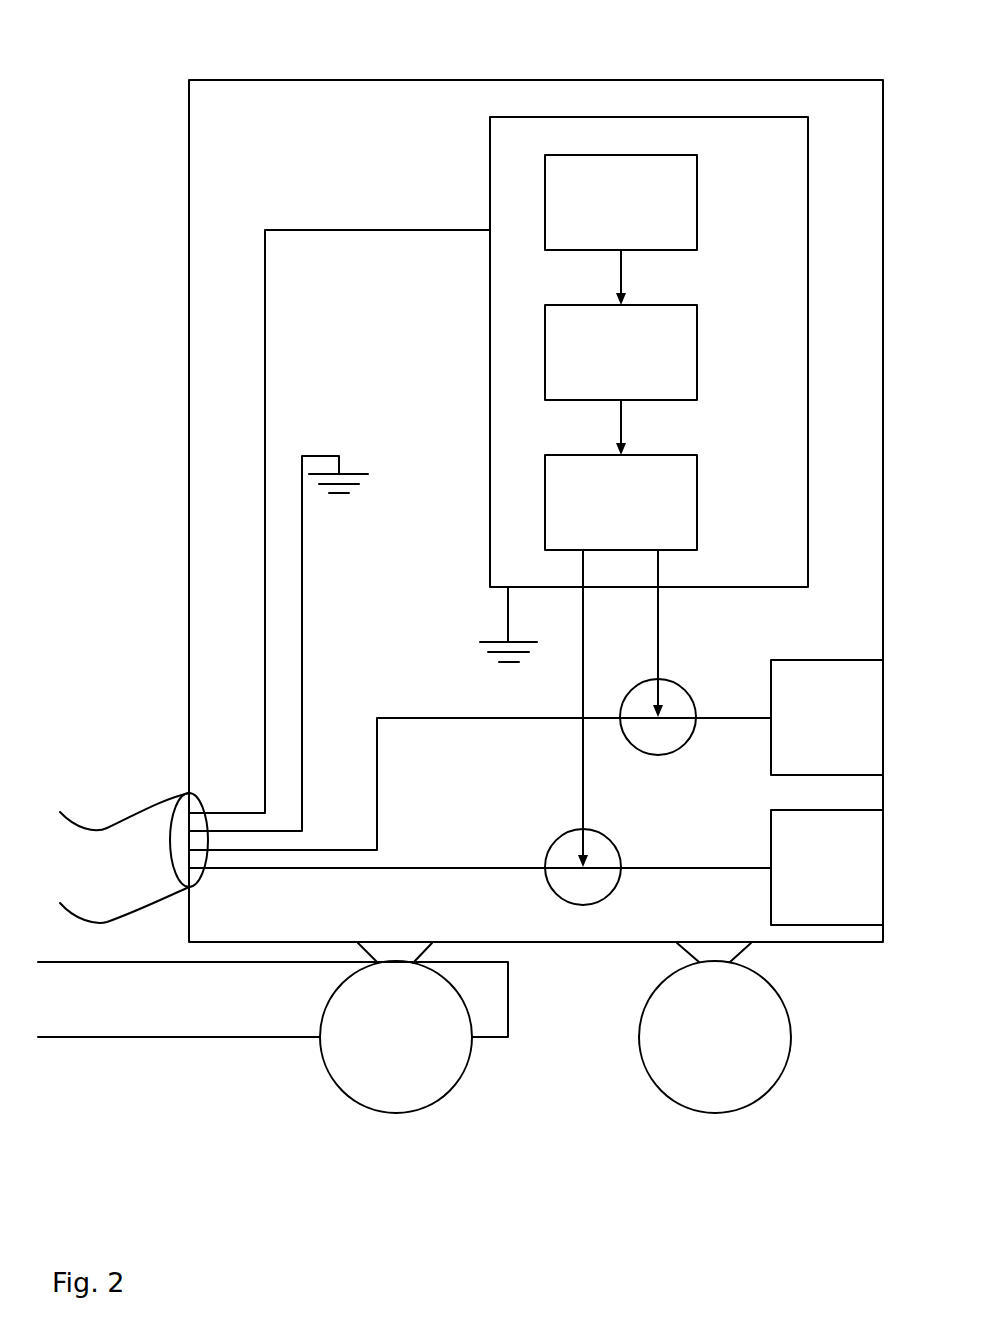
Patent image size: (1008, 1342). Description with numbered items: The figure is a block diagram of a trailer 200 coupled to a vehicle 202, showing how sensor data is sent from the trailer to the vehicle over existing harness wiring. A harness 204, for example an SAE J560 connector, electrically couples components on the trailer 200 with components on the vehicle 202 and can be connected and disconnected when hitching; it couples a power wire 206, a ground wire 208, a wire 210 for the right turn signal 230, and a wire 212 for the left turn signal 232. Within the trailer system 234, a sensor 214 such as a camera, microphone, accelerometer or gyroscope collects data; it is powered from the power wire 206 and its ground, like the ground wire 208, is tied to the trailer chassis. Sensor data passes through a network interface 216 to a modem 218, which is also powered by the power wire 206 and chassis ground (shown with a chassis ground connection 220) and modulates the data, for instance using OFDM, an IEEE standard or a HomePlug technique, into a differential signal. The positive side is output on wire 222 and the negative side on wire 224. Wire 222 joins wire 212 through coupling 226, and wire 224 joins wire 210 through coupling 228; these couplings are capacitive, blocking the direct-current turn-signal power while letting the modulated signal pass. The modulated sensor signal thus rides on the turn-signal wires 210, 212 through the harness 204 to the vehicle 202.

The trailer 200 is at (410, 80).
The vehicle 202 is at (237, 1037).
The harness 204 is at (88, 822).
The power wire 206 is at (385, 230).
The ground wire 208 is at (322, 453).
The wire for right turn signal 210 is at (387, 712).
The wire for left turn signal 212 is at (415, 865).
The sensor 214 is at (697, 212).
The network interface 216 is at (697, 355).
The modem 218 is at (697, 502).
The ground connection 220 is at (508, 607).
The wire 222 is at (583, 790).
The wire 224 is at (662, 647).
The coupling 226 is at (553, 897).
The coupling 228 is at (660, 755).
The right turn signal 230 is at (848, 660).
The left turn signal 232 is at (771, 898).
The trailer system 234 is at (490, 148).